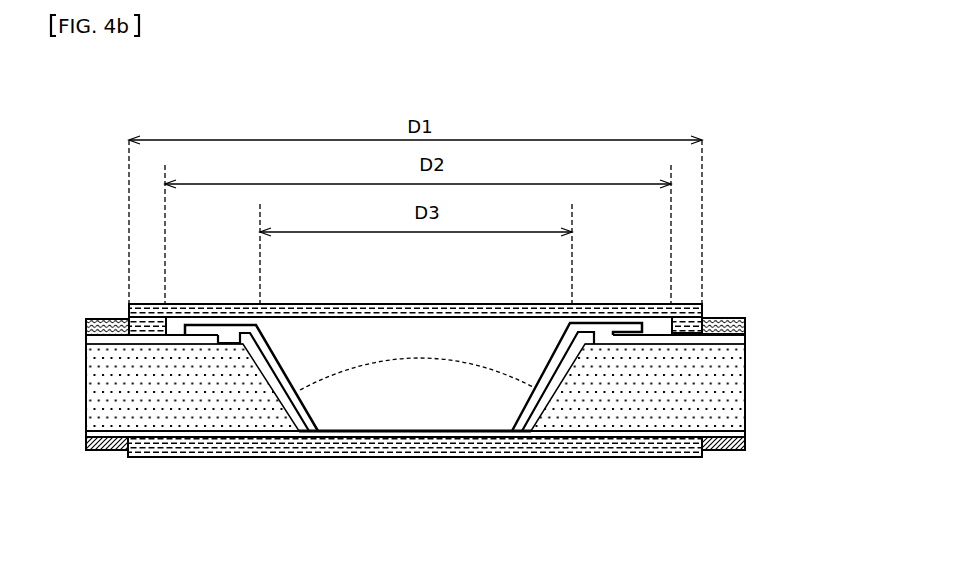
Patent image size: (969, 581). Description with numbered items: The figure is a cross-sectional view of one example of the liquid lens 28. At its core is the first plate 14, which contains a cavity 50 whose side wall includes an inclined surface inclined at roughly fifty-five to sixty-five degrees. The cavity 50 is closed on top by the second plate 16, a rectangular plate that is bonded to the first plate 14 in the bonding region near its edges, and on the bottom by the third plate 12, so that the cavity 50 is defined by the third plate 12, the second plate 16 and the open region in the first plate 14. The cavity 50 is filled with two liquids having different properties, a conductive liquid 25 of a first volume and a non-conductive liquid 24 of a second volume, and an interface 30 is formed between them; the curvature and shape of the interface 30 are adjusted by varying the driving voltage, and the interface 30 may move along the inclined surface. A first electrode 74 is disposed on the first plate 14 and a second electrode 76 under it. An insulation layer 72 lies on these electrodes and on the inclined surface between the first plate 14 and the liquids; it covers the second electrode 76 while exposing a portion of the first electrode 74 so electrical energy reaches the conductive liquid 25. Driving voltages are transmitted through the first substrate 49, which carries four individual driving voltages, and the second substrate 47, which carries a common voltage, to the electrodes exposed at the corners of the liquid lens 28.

The third plate 12 is at (416, 458).
The first plate 14 is at (746, 385).
The second plate 16 is at (418, 303).
The non-conductive liquid 24 is at (352, 403).
The conductive liquid 25 is at (352, 338).
The liquid lens 28 is at (812, 209).
The interface 30 is at (463, 359).
The second substrate 47 is at (735, 311).
The first substrate 49 is at (722, 450).
The cavity 50 is at (483, 432).
The insulation layer 72 is at (263, 327).
The first electrode 74 is at (746, 337).
The second electrode 76 is at (746, 432).